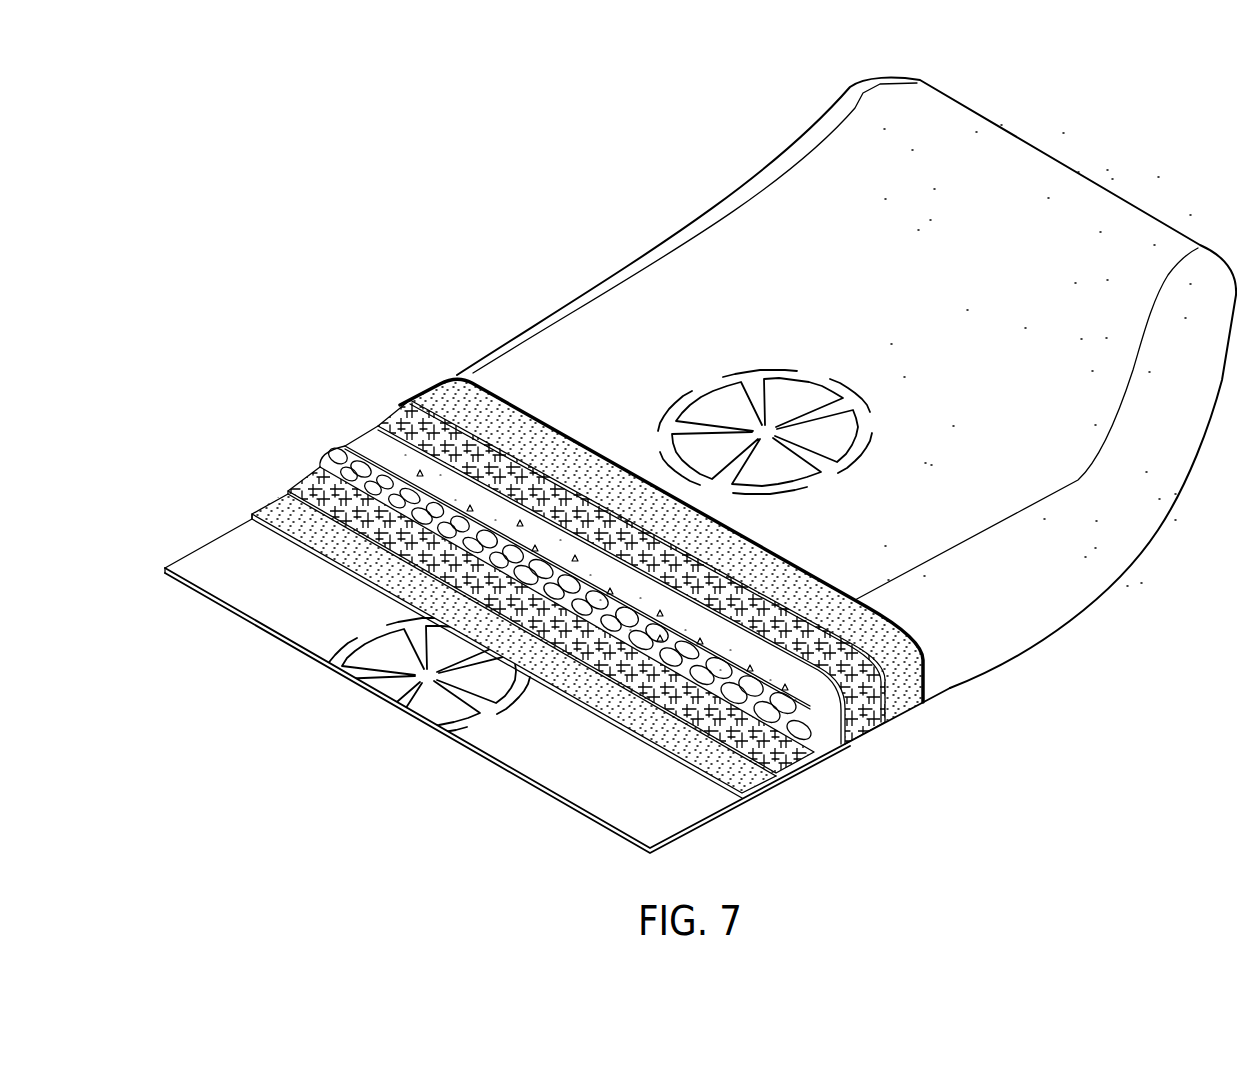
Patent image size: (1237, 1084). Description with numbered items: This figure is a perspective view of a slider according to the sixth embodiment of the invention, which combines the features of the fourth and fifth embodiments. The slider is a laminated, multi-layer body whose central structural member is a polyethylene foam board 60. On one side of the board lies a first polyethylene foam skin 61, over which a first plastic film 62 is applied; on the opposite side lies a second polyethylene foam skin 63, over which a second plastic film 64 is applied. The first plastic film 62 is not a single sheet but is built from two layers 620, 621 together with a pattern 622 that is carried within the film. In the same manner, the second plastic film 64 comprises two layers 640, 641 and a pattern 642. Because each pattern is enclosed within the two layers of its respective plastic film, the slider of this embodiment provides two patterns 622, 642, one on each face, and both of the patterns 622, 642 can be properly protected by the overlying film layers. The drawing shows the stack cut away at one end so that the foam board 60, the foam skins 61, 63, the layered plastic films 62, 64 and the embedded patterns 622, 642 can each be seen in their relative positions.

The polyethylene foam board 60 is at (823, 730).
The first polyethylene foam skin 61 is at (868, 723).
The first plastic film 62 is at (818, 452).
The layer 620 is at (908, 700).
The layer 621 is at (983, 670).
The pattern 622 is at (812, 402).
The second polyethylene foam skin 63 is at (312, 478).
The second plastic film 64 is at (554, 582).
The layer 640 is at (275, 512).
The layer 641 is at (554, 638).
The pattern 642 is at (500, 713).